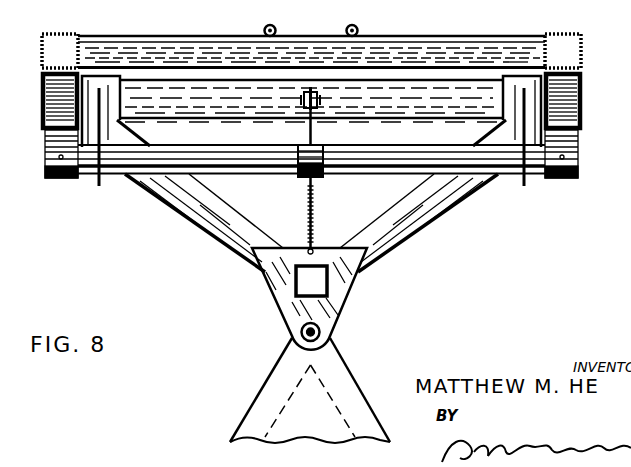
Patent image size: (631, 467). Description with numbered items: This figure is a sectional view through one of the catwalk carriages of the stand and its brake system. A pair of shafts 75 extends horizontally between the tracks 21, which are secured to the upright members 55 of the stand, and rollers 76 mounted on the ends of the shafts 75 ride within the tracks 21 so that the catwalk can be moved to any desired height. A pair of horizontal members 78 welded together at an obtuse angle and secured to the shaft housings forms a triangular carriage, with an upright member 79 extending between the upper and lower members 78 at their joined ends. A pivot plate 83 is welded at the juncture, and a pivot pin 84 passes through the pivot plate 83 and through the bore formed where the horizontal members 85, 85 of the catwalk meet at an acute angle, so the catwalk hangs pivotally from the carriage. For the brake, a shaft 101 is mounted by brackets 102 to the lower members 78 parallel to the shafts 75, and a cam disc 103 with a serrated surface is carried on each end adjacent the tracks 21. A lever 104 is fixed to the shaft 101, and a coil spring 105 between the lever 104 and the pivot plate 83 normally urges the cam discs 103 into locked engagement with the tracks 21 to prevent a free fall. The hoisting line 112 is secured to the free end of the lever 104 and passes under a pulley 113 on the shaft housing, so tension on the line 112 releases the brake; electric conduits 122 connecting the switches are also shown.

The tracks 21 is at (42, 78).
The upright members 55 is at (66, 33).
The shafts 75 is at (433, 121).
The rollers 76 is at (58, 105).
The horizontal members 78 is at (192, 221).
The upright member 79 is at (295, 283).
The pivot plate 83 is at (341, 308).
The pivot pin 84 is at (300, 333).
The horizontal members 85 is at (247, 418).
The brake shaft 101 is at (243, 172).
The brackets 102 is at (98, 187).
The cam disc 103 is at (52, 178).
The lever 104 is at (314, 181).
The coil spring 105 is at (313, 220).
The line 112 is at (313, 138).
The pulley 113 is at (318, 99).
The electric conduits 122 is at (265, 27).